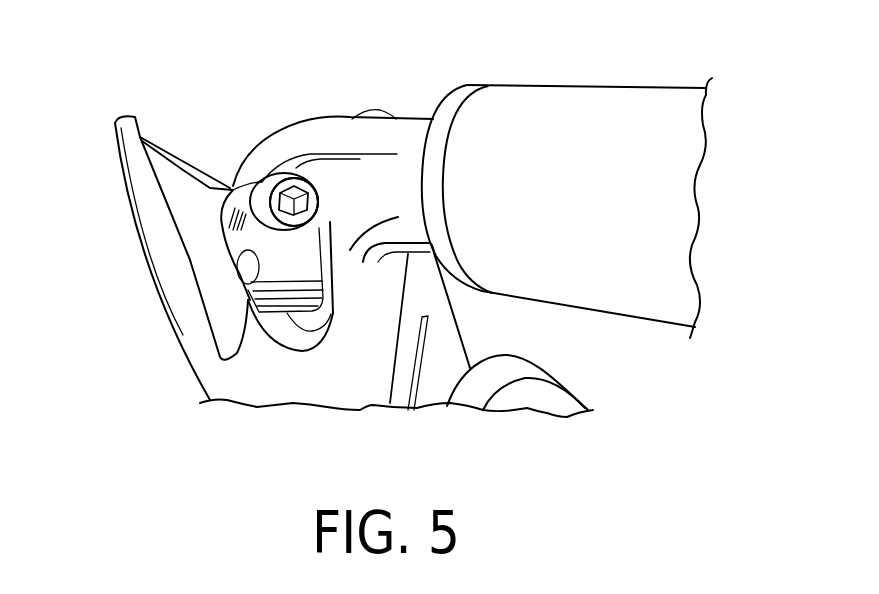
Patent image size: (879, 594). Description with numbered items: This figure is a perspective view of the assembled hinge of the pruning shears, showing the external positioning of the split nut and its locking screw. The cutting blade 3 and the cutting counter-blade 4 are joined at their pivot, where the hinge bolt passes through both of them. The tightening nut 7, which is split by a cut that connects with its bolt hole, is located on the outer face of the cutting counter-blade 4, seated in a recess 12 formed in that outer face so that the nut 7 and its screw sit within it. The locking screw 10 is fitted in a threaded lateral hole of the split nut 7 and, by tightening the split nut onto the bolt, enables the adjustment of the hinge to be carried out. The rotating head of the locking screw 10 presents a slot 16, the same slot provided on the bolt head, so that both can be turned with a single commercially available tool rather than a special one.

The cutting blade 3 is at (438, 373).
The cutting counter-blade 4 is at (353, 132).
The tightening nut 7 is at (237, 235).
The locking screw 10 is at (289, 182).
The recess 12 is at (342, 210).
The slot 16 is at (290, 205).